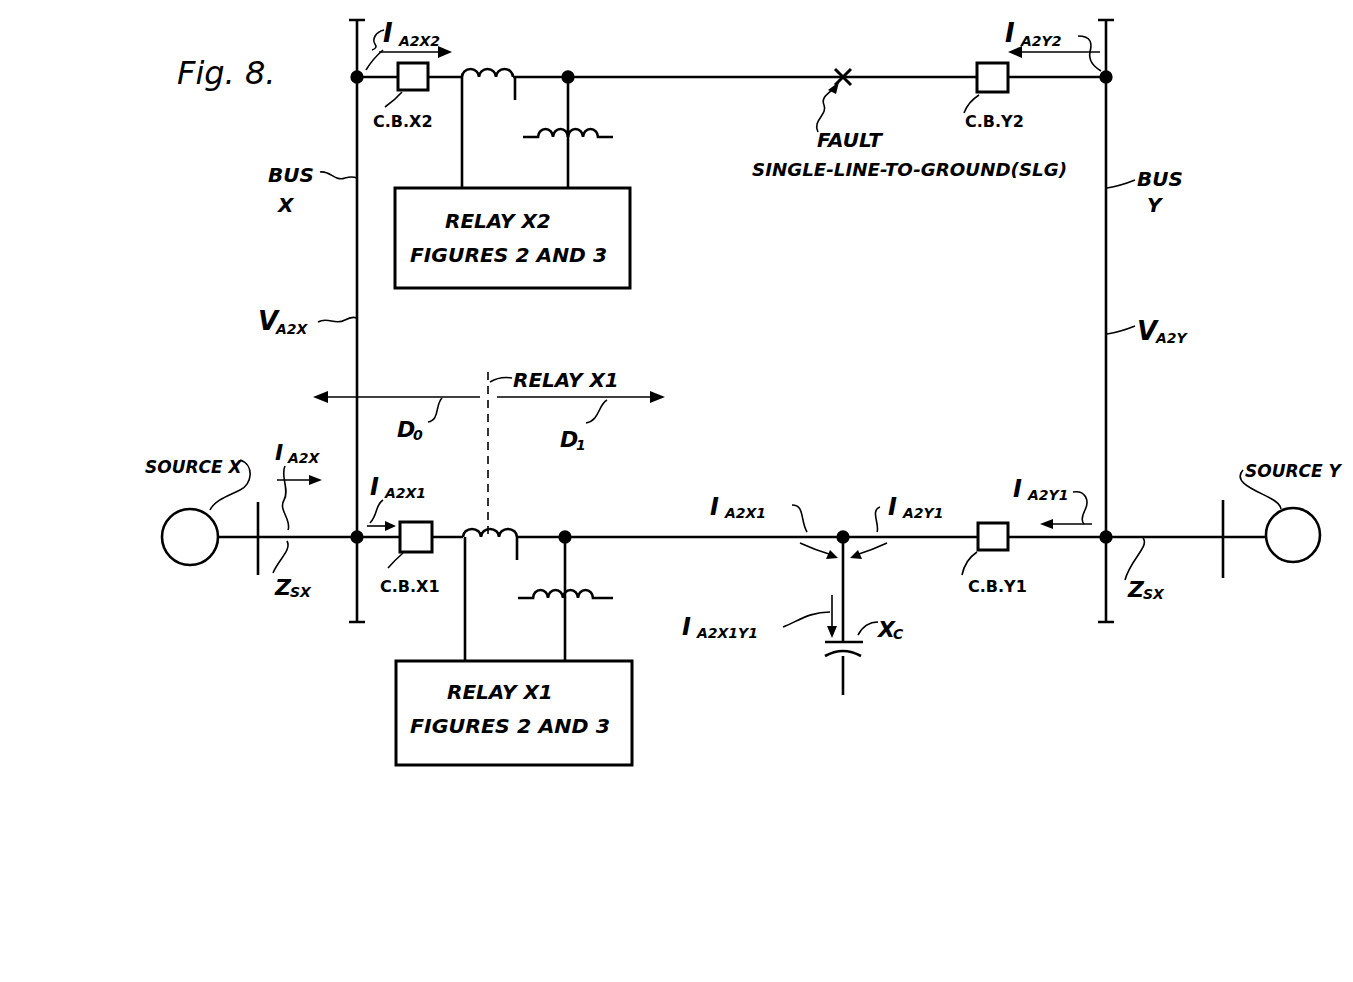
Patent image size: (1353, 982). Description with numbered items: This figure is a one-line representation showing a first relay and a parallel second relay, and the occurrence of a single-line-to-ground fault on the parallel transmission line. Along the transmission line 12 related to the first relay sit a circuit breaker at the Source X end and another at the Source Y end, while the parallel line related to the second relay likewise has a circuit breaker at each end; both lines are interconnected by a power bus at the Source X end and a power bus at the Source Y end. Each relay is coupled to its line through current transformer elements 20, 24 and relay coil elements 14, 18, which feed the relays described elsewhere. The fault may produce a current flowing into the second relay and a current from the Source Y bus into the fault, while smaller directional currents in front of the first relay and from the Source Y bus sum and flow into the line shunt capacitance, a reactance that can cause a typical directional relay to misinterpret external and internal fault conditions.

The transmission line 12 is at (642, 537).
The relay current transformer coil 14 is at (597, 369).
The relay current transformer coil 18 is at (597, 130).
The current transformer 20 is at (521, 346).
The current transformer 24 is at (497, 68).